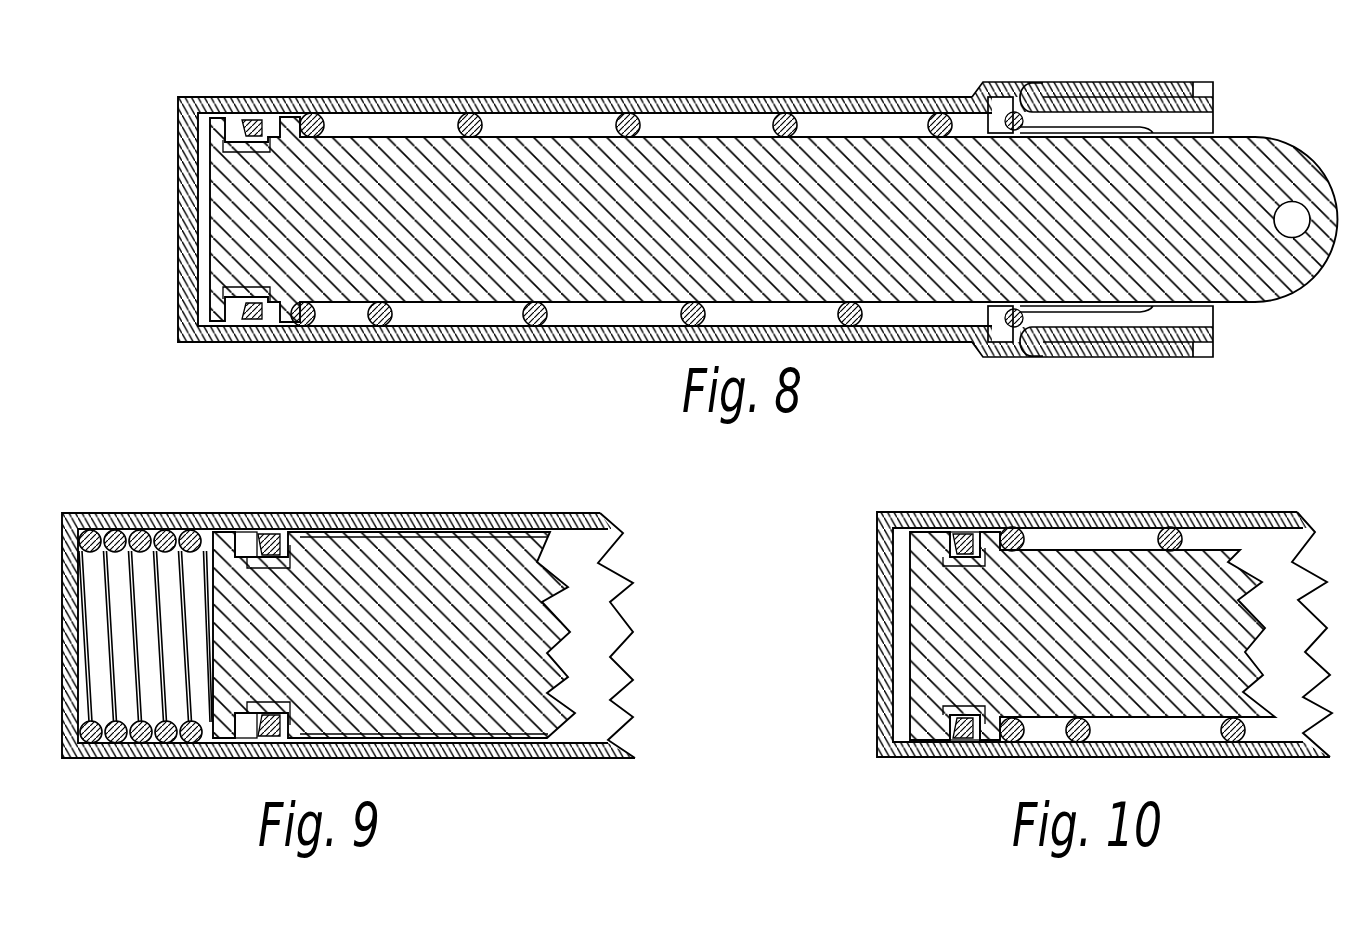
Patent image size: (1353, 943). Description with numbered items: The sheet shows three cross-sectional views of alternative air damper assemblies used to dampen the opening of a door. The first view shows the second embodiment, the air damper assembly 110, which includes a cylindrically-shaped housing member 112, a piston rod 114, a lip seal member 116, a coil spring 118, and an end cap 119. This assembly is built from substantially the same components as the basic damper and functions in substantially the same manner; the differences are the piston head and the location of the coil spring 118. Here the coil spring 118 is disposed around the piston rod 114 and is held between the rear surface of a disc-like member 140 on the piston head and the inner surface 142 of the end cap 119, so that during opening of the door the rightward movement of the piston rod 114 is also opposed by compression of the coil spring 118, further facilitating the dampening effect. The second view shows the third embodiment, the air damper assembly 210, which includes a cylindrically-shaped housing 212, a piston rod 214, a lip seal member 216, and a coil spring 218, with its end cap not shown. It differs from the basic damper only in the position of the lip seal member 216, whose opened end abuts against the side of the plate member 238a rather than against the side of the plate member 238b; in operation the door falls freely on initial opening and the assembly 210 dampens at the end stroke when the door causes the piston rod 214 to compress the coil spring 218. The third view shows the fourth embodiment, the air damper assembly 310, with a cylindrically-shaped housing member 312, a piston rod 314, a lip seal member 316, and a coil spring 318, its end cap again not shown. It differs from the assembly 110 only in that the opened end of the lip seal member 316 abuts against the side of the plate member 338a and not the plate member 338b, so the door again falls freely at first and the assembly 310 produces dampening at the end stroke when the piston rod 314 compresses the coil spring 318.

In FIG. 8, the air damper assembly 110 is at (605, 75).
In FIG. 8, the housing member 112 is at (708, 95).
In FIG. 8, the piston rod 114 is at (1298, 147).
In FIG. 8, the lip seal member 116 is at (238, 95).
In FIG. 8, the coil spring 118 is at (481, 132).
In FIG. 8, the end cap 119 is at (1213, 98).
In FIG. 8, the disc-like member 140 is at (300, 132).
In FIG. 8, the inner surface 142 is at (1008, 93).
In FIG. 9, the air damper assembly 210 is at (372, 478).
In FIG. 9, the housing 212 is at (415, 512).
In FIG. 9, the piston rod 214 is at (488, 553).
In FIG. 9, the lip seal member 216 is at (277, 535).
In FIG. 9, the coil spring 218 is at (120, 533).
In FIG. 9, the plate member 238a is at (237, 532).
In FIG. 9, the plate member 238b is at (305, 557).
In FIG. 10, the air damper assembly 310 is at (1097, 487).
In FIG. 10, the housing member 312 is at (1075, 512).
In FIG. 10, the piston rod 314 is at (1205, 567).
In FIG. 10, the lip seal member 316 is at (966, 545).
In FIG. 10, the coil spring 318 is at (1163, 528).
In FIG. 10, the plate member 338a is at (934, 532).
In FIG. 10, the plate member 338b is at (994, 545).